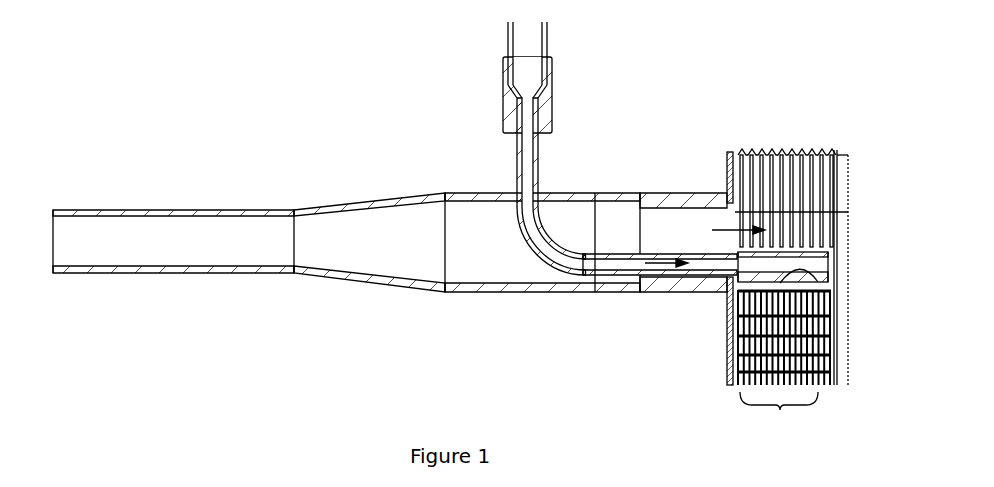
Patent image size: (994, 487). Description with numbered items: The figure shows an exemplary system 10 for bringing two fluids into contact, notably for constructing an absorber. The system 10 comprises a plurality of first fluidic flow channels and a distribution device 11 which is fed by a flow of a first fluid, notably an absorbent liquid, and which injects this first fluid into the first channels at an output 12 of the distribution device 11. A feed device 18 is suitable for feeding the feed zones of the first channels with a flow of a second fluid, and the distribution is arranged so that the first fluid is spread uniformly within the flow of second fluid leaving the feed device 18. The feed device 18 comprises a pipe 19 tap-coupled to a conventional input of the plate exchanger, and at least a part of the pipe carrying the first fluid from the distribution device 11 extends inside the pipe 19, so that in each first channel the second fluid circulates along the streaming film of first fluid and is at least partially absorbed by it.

The system 10 is at (340, 107).
The distribution device 11 is at (830, 262).
The output 12 is at (818, 282).
The feed device 18 is at (672, 212).
The pipe 19 is at (685, 200).